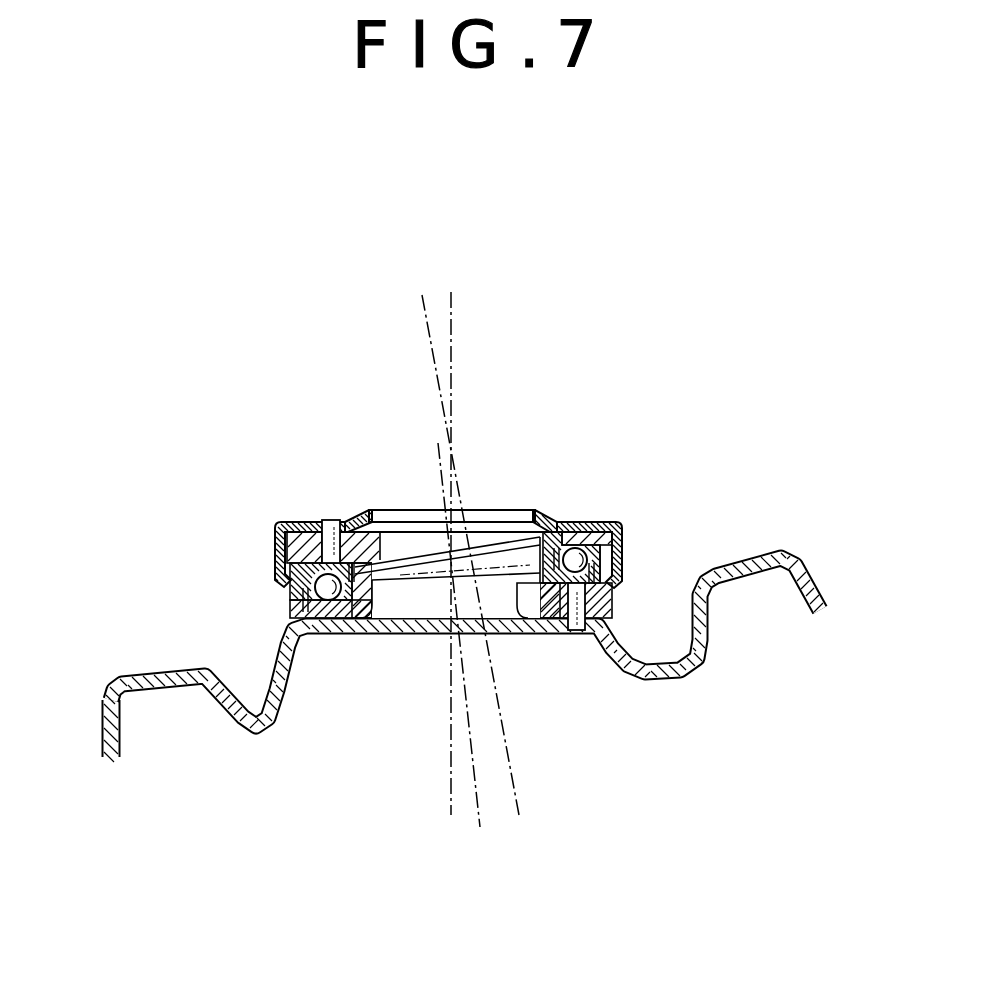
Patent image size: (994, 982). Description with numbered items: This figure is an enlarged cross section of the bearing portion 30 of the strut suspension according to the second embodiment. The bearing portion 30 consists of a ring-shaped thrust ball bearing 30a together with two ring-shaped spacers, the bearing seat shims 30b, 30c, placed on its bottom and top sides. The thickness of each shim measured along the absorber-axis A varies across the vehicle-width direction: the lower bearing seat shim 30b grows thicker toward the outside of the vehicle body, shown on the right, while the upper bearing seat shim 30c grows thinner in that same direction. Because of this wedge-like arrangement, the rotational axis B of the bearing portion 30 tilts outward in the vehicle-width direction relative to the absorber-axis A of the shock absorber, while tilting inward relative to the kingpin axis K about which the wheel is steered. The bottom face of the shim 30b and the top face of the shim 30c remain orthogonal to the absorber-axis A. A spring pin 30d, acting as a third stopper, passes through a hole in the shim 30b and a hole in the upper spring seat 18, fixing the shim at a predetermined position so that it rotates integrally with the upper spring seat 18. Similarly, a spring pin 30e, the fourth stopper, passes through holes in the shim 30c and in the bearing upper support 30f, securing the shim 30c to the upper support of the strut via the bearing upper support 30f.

The upper spring seat 18 is at (815, 572).
The bearing portion 30 is at (266, 541).
The thrust ball bearing 30a is at (612, 545).
The bearing seat shim 30b is at (622, 588).
The bearing seat shim 30c is at (566, 522).
The spring pin 30d is at (578, 632).
The spring pin 30e is at (333, 519).
The bearing upper support 30f is at (598, 522).
The absorber-axis A is at (452, 350).
The rotational axis B is at (470, 787).
The kingpin axis K is at (437, 380).